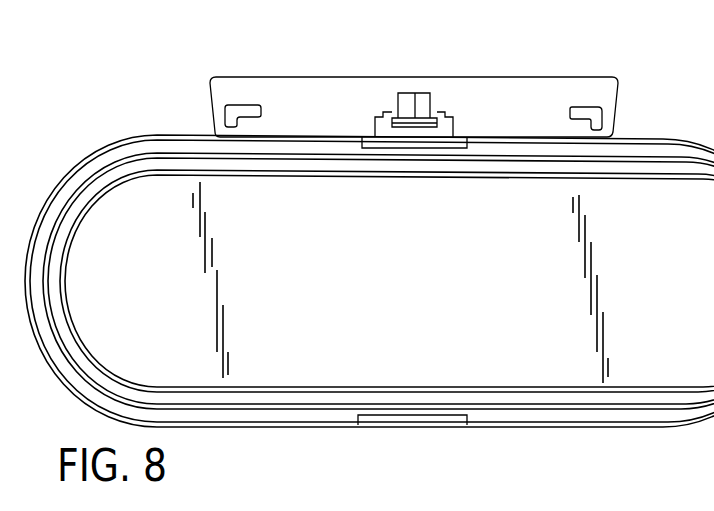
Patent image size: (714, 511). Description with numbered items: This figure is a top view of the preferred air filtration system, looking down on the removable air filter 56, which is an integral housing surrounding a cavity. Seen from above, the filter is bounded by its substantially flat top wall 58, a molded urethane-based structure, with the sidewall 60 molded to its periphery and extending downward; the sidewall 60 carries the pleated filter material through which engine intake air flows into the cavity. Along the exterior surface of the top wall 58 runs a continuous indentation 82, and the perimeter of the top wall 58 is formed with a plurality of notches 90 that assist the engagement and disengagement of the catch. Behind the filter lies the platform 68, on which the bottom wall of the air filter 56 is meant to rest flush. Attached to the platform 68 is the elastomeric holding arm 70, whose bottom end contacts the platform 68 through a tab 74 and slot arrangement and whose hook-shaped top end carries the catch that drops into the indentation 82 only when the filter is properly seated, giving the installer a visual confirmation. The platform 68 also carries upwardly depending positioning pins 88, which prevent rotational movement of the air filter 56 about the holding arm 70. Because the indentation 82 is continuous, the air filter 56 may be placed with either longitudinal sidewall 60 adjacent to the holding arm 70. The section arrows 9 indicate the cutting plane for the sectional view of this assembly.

The section line 9- 9 is at (413, 62).
The air filter 56 is at (426, 295).
The top wall 58 is at (100, 325).
The sidewall 60 is at (190, 428).
The platform 68 is at (605, 93).
The holding arm 70 is at (422, 102).
The tab 74 is at (450, 118).
The indentation 82 is at (292, 398).
The positioning pins 88 is at (228, 124).
The notches 90 is at (466, 140).